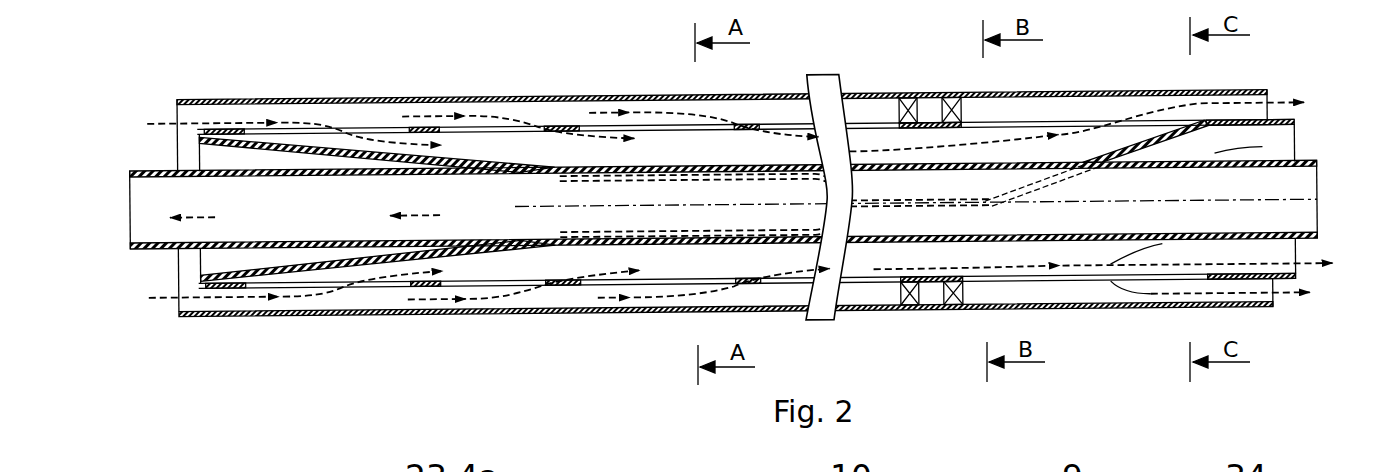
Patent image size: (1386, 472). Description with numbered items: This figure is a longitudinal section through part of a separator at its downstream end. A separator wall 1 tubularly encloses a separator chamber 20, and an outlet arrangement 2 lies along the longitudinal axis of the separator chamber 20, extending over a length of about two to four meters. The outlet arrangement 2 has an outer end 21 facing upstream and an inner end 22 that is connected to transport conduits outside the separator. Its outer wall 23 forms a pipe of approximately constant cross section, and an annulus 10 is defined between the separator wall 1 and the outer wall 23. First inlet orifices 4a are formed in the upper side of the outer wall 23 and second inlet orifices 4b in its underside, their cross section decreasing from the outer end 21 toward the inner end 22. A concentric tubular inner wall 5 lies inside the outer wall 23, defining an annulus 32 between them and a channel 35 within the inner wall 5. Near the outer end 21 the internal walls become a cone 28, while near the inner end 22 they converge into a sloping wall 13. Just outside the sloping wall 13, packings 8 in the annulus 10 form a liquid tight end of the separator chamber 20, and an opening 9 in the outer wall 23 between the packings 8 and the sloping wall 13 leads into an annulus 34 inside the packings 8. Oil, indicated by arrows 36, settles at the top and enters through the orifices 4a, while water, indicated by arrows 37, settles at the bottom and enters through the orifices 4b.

The separator wall 1 is at (277, 102).
The outlet arrangement 2 is at (570, 172).
The first inlet orifices 4a is at (347, 130).
The second inlet orifices 4b is at (353, 287).
The inner wall 5 is at (150, 197).
The packings 8 is at (953, 99).
The opening 9 is at (1082, 118).
The annulus 10 is at (543, 113).
The sloping wall 13 is at (1052, 178).
The separator chamber 20 is at (200, 115).
The outer end 21 is at (200, 278).
The inner end 22 is at (1295, 119).
The outer wall 23 is at (427, 128).
The cone 28 is at (290, 143).
The annulus 32 is at (1280, 250).
The annulus 34 is at (1217, 90).
The channel 35 is at (128, 172).
The arrows indicating oil 36 is at (228, 120).
The arrows indicating water 37 is at (245, 300).